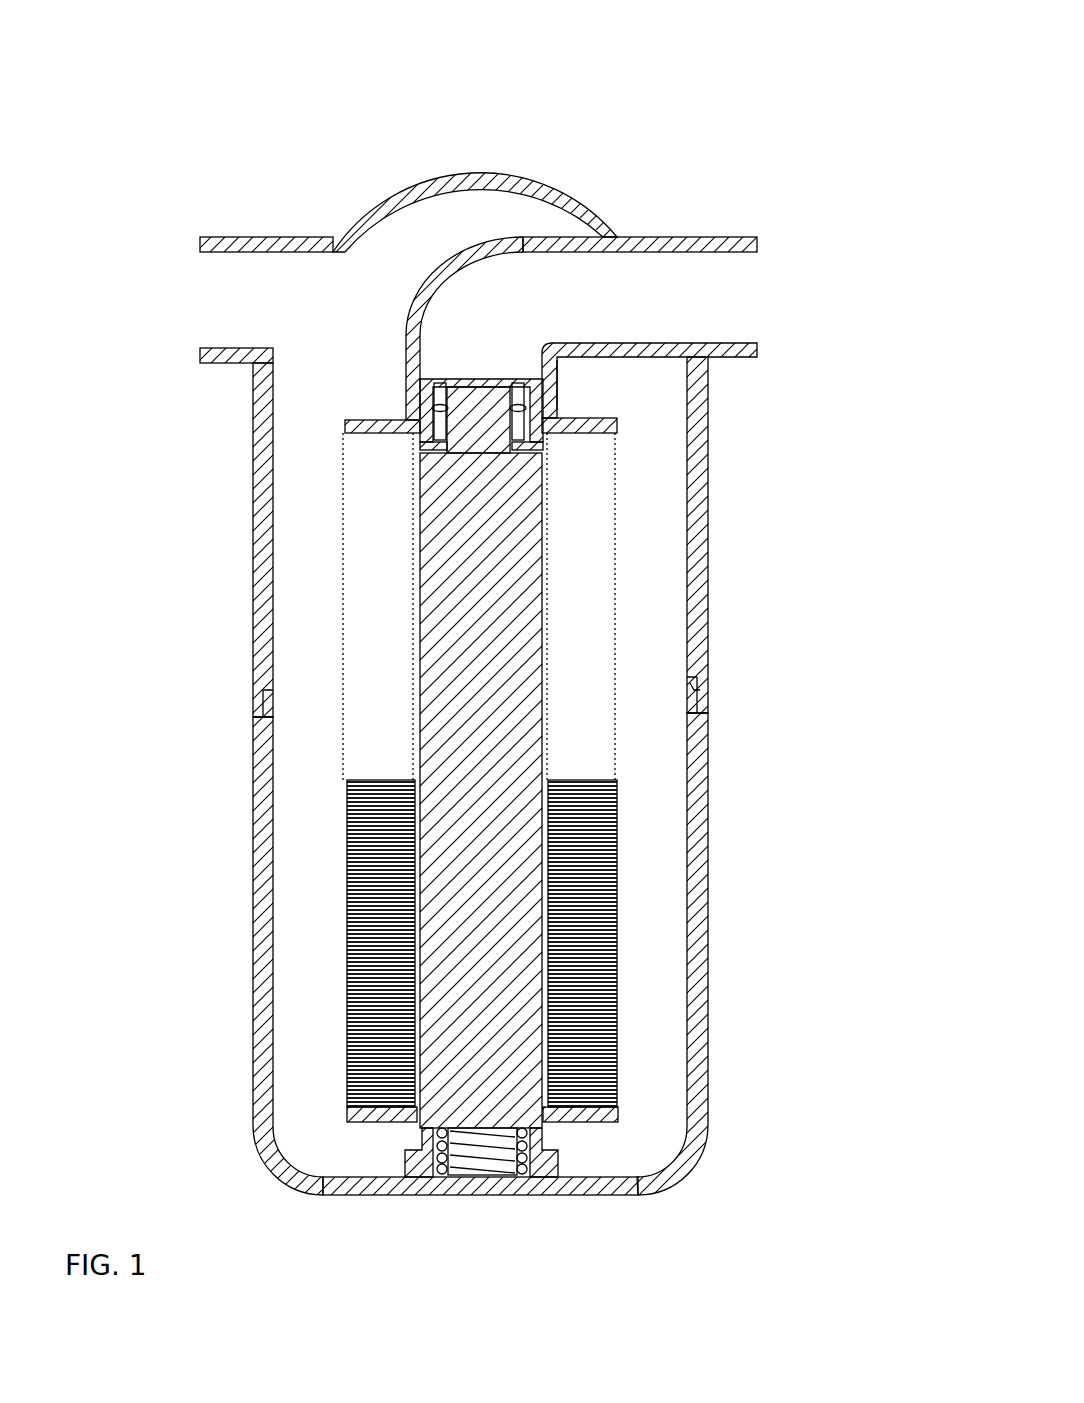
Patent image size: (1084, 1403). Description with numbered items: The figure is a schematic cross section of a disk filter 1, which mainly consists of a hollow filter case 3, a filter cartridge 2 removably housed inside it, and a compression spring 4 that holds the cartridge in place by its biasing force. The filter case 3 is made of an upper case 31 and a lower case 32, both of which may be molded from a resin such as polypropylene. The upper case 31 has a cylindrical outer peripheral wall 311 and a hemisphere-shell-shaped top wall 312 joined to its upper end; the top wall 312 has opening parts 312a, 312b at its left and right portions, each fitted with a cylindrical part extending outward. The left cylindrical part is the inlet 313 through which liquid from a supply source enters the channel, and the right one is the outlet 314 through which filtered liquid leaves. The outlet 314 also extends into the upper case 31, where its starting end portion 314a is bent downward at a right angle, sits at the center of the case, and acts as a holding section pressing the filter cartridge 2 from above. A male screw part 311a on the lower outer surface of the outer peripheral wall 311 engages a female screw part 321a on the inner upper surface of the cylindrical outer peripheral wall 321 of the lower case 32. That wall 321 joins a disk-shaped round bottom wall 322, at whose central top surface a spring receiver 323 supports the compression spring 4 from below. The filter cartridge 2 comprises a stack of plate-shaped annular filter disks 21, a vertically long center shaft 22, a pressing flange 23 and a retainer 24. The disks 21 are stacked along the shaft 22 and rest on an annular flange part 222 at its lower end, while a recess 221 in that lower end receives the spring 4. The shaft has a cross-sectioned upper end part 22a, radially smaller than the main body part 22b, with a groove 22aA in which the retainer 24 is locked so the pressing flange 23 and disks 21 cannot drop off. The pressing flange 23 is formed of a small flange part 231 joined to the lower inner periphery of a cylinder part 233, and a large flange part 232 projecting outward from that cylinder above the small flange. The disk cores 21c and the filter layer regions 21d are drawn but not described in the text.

The disk filter 1 is at (249, 92).
The filter cartridge 2 is at (350, 418).
The filter case 3 is at (360, 212).
The compression spring 4 is at (482, 1165).
The filter disks 21 is at (345, 773).
The stator core 21c is at (347, 870).
The coil 21d is at (414, 786).
The center shaft 22 is at (382, 1125).
The upper end part 22a is at (483, 390).
The groove 22aA is at (443, 405).
The main body part 22b is at (515, 640).
The recess 221 is at (512, 1180).
The flange part 222 is at (345, 1110).
The pressing flange 23 is at (402, 418).
The small flange part 231 is at (416, 474).
The large flange part 232 is at (345, 418).
The cylinder part 233 is at (558, 400).
The retainer 24 is at (520, 395).
The upper case 31 is at (252, 500).
The outer peripheral wall 311 is at (252, 570).
The male screw part 311a is at (255, 710).
The top wall 312 is at (470, 172).
The opening part 312a is at (333, 254).
The opening part 312b is at (623, 251).
The inlet 313 is at (230, 365).
The outlet 314 is at (640, 236).
The starting end portion 314a is at (555, 409).
The lower case 32 is at (252, 830).
The outer peripheral wall 321 is at (252, 890).
The female screw part 321a is at (695, 680).
The bottom wall 322 is at (360, 1197).
The spring receiver 323 is at (560, 1163).